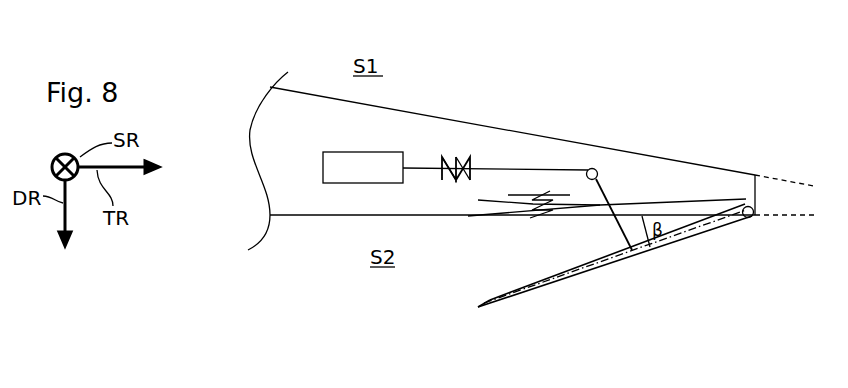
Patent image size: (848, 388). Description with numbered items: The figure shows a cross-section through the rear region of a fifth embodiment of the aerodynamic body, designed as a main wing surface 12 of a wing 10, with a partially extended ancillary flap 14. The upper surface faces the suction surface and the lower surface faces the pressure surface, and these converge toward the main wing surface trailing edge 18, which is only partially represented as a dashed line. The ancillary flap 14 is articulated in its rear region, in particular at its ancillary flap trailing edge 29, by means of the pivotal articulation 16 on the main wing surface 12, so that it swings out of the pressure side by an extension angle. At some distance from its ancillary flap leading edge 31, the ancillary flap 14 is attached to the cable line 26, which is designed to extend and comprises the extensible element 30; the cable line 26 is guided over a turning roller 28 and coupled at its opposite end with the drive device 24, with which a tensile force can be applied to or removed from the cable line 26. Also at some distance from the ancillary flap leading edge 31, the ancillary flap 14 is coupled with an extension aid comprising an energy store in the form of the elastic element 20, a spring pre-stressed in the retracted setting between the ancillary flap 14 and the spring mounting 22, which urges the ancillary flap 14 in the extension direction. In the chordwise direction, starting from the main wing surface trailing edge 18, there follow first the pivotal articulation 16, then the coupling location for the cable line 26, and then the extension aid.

The wing 10 is at (561, 86).
The main wing surface 12 is at (620, 149).
The ancillary flap 14 is at (670, 245).
The pivotal articulation 16 is at (744, 219).
The main wing surface trailing edge 18 is at (782, 190).
The elastic element 20 is at (599, 202).
The spring mounting 22 is at (538, 201).
The drive device 24 is at (337, 155).
The cable line 26 is at (434, 167).
The turning roller 28 is at (600, 170).
The ancillary flap trailing edge 29 is at (761, 213).
The extensible element 30 is at (467, 166).
The ancillary flap leading edge 31 is at (478, 307).